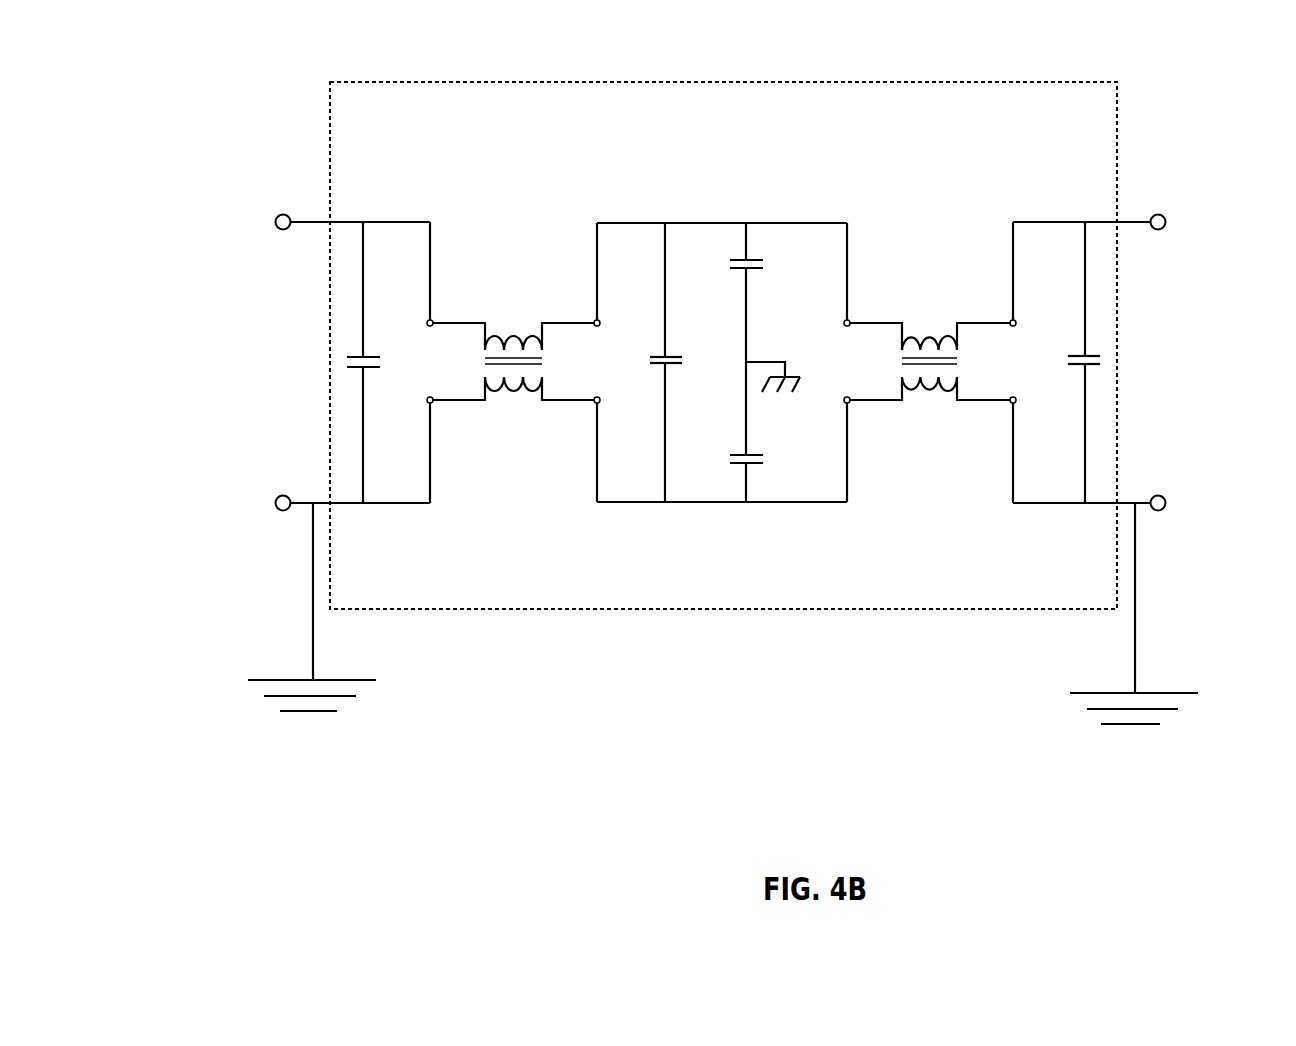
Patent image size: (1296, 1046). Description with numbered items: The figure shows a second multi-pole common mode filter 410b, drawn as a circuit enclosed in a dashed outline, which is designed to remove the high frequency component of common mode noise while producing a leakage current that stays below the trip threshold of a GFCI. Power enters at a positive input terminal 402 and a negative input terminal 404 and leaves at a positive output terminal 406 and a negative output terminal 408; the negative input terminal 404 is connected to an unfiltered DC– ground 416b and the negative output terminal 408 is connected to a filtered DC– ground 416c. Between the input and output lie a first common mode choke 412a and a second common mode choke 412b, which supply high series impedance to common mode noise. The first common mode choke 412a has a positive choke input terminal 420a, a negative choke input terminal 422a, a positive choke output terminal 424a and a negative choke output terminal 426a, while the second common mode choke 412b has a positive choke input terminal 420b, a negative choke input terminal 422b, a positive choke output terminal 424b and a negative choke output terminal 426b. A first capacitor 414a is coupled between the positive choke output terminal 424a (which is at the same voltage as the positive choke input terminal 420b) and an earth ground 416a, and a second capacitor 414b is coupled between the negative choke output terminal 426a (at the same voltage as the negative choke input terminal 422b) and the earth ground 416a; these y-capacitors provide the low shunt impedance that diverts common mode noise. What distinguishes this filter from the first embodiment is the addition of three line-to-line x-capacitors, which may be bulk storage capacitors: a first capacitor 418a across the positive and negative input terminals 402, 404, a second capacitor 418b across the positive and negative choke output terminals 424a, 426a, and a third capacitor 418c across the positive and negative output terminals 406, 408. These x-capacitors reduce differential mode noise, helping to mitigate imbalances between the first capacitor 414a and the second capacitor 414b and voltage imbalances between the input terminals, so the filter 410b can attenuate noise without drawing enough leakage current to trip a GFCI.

The positive input terminal 402 is at (276, 222).
The negative input terminal 404 is at (276, 503).
The positive output terminal 406 is at (1166, 222).
The negative output terminal 408 is at (1166, 503).
The second multi-pole common mode filter 410b is at (803, 82).
The first common mode choke 412a is at (502, 212).
The second common mode choke 412b is at (915, 222).
The first capacitor 414a is at (737, 257).
The second capacitor 414b is at (733, 465).
The earth ground 416a is at (785, 362).
The unfiltered DC– ground 416b is at (245, 725).
The filtered DC– ground 416c is at (1018, 714).
The first capacitor 418a is at (347, 357).
The second capacitor 418b is at (650, 357).
The third capacitor 418c is at (1100, 360).
The positive choke input terminal 420a is at (427, 323).
The negative choke input terminal 422a is at (427, 400).
The positive choke output terminal 424a is at (597, 320).
The negative choke output terminal 426a is at (597, 404).
The positive choke input terminal 420b is at (849, 321).
The negative choke input terminal 422b is at (849, 402).
The positive choke output terminal 424b is at (1016, 323).
The negative choke output terminal 426b is at (1016, 400).